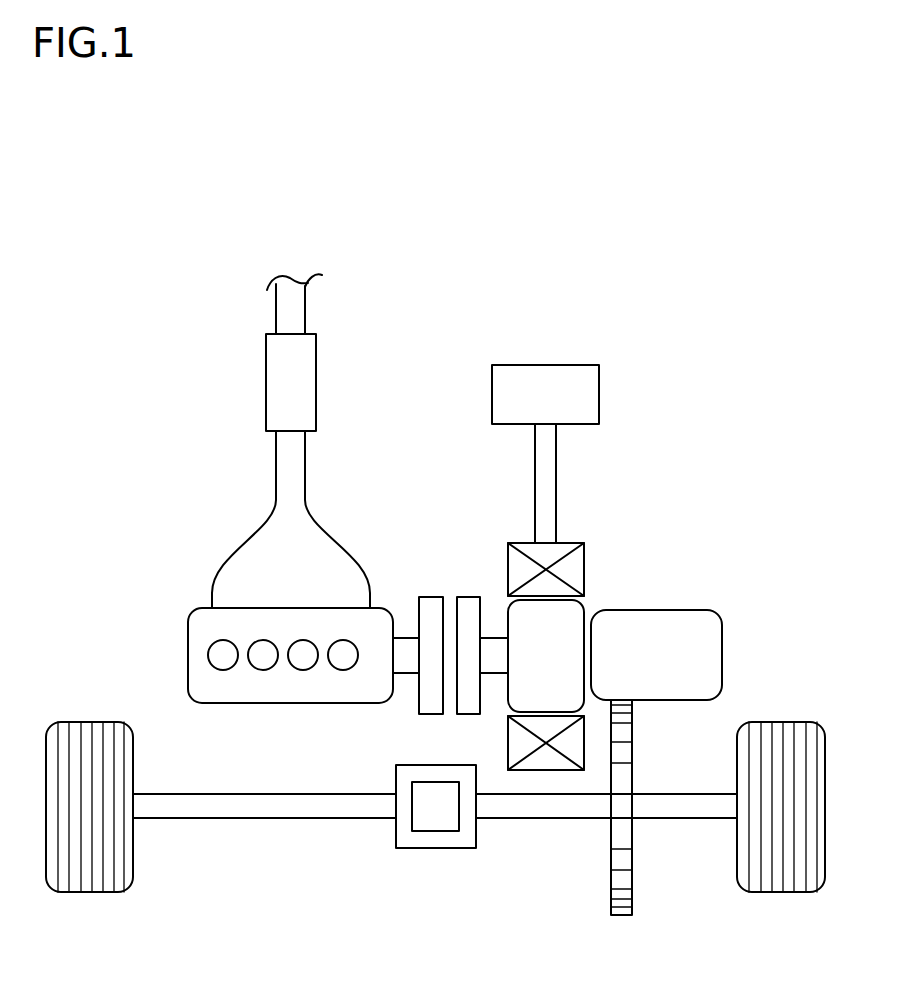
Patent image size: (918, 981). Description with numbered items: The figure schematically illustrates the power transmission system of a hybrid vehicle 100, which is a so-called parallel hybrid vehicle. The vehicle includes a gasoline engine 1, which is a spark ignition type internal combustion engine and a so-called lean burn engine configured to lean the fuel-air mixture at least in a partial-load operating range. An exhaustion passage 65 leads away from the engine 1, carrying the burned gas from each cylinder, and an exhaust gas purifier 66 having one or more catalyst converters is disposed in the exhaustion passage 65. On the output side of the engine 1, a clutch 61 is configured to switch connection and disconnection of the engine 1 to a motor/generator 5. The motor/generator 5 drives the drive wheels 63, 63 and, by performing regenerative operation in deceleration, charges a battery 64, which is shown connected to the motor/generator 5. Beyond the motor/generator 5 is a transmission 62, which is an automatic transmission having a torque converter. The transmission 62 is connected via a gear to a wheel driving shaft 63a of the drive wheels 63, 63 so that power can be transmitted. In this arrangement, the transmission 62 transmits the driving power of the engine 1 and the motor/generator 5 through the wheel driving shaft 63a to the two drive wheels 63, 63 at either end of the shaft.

The hybrid vehicle 100 is at (175, 343).
The engine 1 is at (187, 648).
The exhaustion passage 65 is at (290, 484).
The exhaust gas purifier 66 is at (299, 383).
The clutch 61 is at (465, 592).
The motor/generator 5 is at (585, 567).
The battery 64 is at (547, 364).
The transmission 62 is at (722, 652).
The wheel driving shaft 63a is at (258, 820).
The drive wheels 63 is at (85, 893).